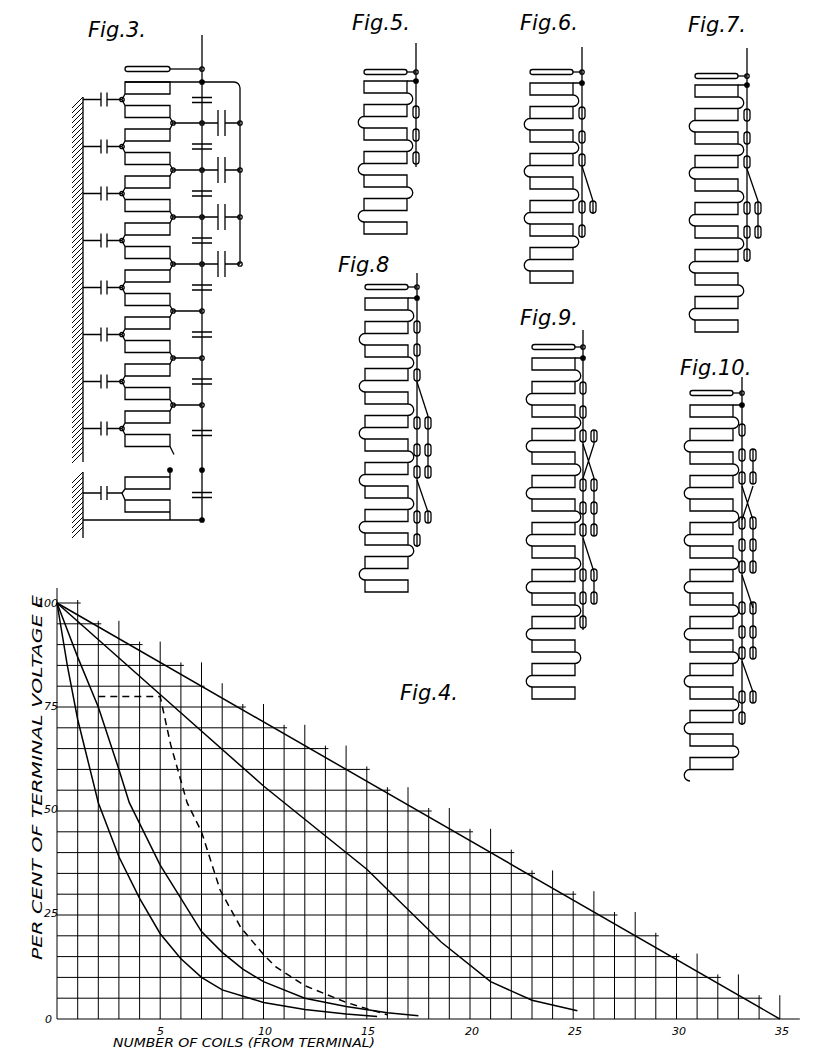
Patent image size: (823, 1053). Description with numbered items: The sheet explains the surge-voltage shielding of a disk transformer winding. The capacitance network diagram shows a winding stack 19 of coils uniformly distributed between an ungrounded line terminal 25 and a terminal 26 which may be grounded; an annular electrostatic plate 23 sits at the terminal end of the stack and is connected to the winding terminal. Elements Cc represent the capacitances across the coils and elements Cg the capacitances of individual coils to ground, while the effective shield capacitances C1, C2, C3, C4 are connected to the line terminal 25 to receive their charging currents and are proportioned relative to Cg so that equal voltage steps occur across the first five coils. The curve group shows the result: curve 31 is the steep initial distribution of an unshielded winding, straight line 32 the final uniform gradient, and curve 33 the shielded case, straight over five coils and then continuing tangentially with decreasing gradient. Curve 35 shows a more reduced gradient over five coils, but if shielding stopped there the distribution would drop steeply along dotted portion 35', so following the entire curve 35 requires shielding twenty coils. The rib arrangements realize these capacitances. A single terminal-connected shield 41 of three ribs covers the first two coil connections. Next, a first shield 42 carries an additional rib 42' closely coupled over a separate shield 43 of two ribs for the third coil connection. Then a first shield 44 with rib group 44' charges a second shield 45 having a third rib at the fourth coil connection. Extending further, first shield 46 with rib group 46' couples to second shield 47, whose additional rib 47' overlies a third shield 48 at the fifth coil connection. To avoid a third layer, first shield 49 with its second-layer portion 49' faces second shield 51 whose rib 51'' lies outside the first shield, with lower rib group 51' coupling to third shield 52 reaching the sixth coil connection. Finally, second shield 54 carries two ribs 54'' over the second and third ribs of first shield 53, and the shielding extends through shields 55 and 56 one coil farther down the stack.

In FIG. 3, the winding stack 19 is at (125, 85).
In FIG. 5, the winding stack 19 is at (363, 86).
In FIG. 6, the winding stack 19 is at (530, 86).
In FIG. 7, the winding stack 19 is at (694, 86).
In FIG. 8, the winding stack 19 is at (359, 346).
In FIG. 9, the winding stack 19 is at (530, 406).
In FIG. 10, the winding stack 19 is at (695, 451).
In FIG. 3, the electrostatic plate 23 is at (146, 68).
In FIG. 5, the electrostatic plate 23 is at (389, 67).
In FIG. 6, the electrostatic plate 23 is at (570, 69).
In FIG. 7, the electrostatic plate 23 is at (736, 74).
In FIG. 8, the electrostatic plate 23 is at (362, 298).
In FIG. 9, the electrostatic plate 23 is at (531, 347).
In FIG. 10, the electrostatic plate 23 is at (692, 393).
In FIG. 3, the line terminal 25 is at (203, 58).
In FIG. 5, the line terminal 25 is at (418, 45).
In FIG. 6, the line terminal 25 is at (584, 48).
In FIG. 7, the line terminal 25 is at (749, 48).
In FIG. 8, the line terminal 25 is at (424, 279).
In FIG. 9, the line terminal 25 is at (584, 335).
In FIG. 10, the line terminal 25 is at (742, 385).
In FIG. 3, the winding terminal 26 is at (128, 521).
In FIG. 3, the coil capacitance elements Cc is at (205, 96).
In FIG. 3, the ground capacitance elements Cg is at (100, 96).
In FIG. 3, the shield capacitance C1 is at (230, 121).
In FIG. 3, the shield capacitance C2 is at (230, 169).
In FIG. 3, the shield capacitance C3 is at (230, 217).
In FIG. 3, the shield capacitance C4 is at (230, 264).
In FIG. 4, the voltage distribution curve 31 is at (131, 886).
In FIG. 4, the final gradient curve 32 is at (387, 796).
In FIG. 4, the gradient curve 33 is at (155, 860).
In FIG. 4, the gradient curve 35 is at (317, 807).
In FIG. 4, the dotted curve portion 35' is at (242, 856).
In FIG. 5, the terminal connected shield 41 is at (419, 134).
In FIG. 6, the first shield 42 is at (597, 154).
In FIG. 6, the additional rib 42' is at (610, 202).
In FIG. 6, the additional shield 43 is at (588, 225).
In FIG. 7, the first shield 44 is at (761, 155).
In FIG. 7, the rib group 44' is at (773, 215).
In FIG. 7, the second shield 45 is at (751, 245).
In FIG. 8, the first shield 46 is at (431, 368).
In FIG. 8, the rib group 46' is at (445, 447).
In FIG. 8, the second shield 47 is at (435, 464).
In FIG. 8, the additional rib 47' is at (445, 514).
In FIG. 8, the third shield 48 is at (422, 539).
In FIG. 9, the first shield 49 is at (600, 430).
In FIG. 9, the second layer portion 49' is at (611, 507).
In FIG. 9, the second shield 51 is at (603, 525).
In FIG. 9, the rib group 51' is at (612, 586).
In FIG. 9, the rib 51'' is at (614, 432).
In FIG. 9, the third shield 52 is at (588, 620).
In FIG. 10, the first shield 53 is at (742, 445).
In FIG. 10, the second shield 54 is at (766, 546).
In FIG. 10, the rib group 54'' is at (771, 464).
In FIG. 10, the shield 55 is at (747, 601).
In FIG. 10, the shield 56 is at (744, 693).